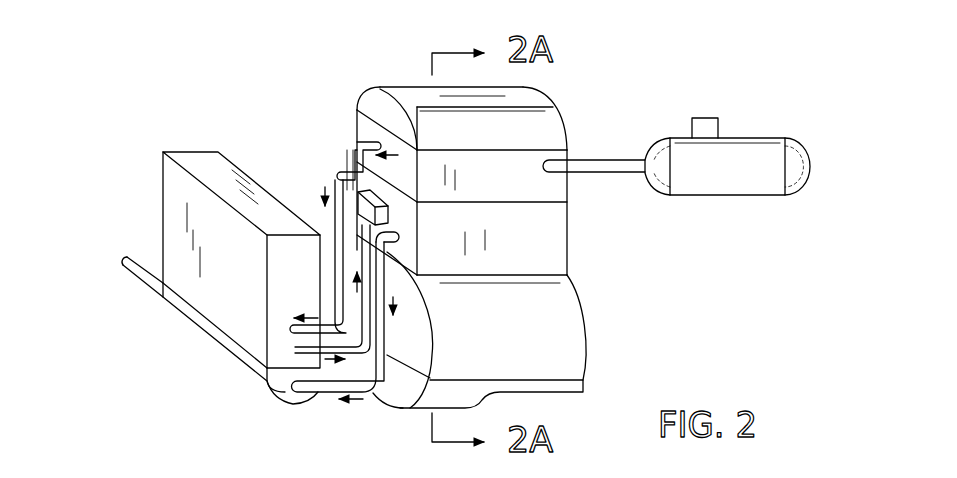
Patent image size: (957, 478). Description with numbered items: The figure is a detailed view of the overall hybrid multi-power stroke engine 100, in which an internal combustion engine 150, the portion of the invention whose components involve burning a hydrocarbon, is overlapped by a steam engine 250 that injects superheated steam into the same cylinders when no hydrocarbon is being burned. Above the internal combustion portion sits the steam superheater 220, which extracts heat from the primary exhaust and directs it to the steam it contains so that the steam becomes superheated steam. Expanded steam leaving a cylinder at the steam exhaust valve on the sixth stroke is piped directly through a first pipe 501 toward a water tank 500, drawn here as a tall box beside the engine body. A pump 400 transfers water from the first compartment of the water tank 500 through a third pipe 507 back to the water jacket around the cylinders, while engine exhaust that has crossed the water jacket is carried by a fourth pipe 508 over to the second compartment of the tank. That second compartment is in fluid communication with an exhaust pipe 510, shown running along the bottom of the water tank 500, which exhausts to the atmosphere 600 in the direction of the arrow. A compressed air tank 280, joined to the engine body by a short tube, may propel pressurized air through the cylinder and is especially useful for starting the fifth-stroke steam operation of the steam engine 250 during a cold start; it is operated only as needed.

The hybrid multi-power stroke engine 100 is at (716, 62).
The internal combustion engine 150 is at (607, 199).
The steam superheater 220 is at (357, 112).
The steam engine 250 is at (807, 108).
The compressed air tank 280 is at (731, 183).
The pump 400 is at (358, 193).
The water tank 500 is at (185, 152).
The first pipe 501 is at (334, 170).
The third pipe 507 is at (366, 300).
The fourth pipe 508 is at (408, 386).
The exhaust pipe 510 is at (144, 283).
The atmosphere 600 is at (104, 243).